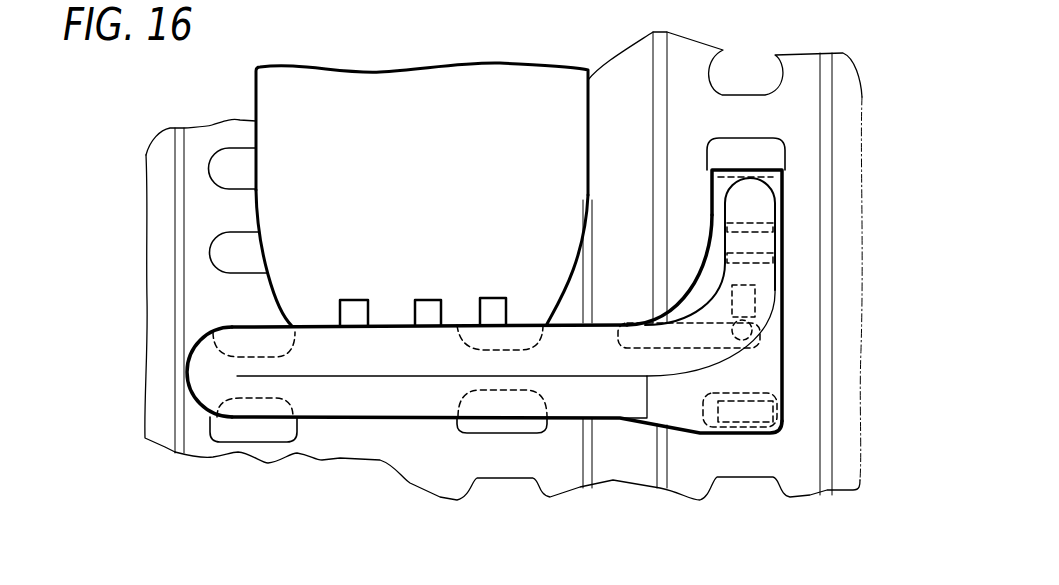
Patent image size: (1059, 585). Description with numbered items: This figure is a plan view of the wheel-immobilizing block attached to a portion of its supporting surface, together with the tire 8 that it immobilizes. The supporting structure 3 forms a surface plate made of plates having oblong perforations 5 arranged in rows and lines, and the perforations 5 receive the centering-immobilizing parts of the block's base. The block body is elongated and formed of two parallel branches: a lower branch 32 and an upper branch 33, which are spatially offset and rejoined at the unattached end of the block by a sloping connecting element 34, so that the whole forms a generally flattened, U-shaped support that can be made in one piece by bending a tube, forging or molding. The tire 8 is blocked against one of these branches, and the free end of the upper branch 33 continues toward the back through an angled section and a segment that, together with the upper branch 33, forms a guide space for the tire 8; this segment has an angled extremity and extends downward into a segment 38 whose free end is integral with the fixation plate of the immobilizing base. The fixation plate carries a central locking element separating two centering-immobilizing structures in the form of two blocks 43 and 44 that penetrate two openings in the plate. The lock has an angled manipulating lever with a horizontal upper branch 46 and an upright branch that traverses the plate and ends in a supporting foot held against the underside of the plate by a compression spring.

The supporting structure 3 is at (842, 441).
The oblong perforations 5 is at (767, 156).
The tire 8 is at (273, 95).
The lower branch 32 is at (215, 405).
The upper branch 33 is at (290, 354).
The sloping connecting element 34 is at (203, 373).
The segment 38 is at (767, 274).
The block 43 is at (760, 243).
The block 44 is at (760, 412).
The horizontal upper branch 46 is at (666, 335).